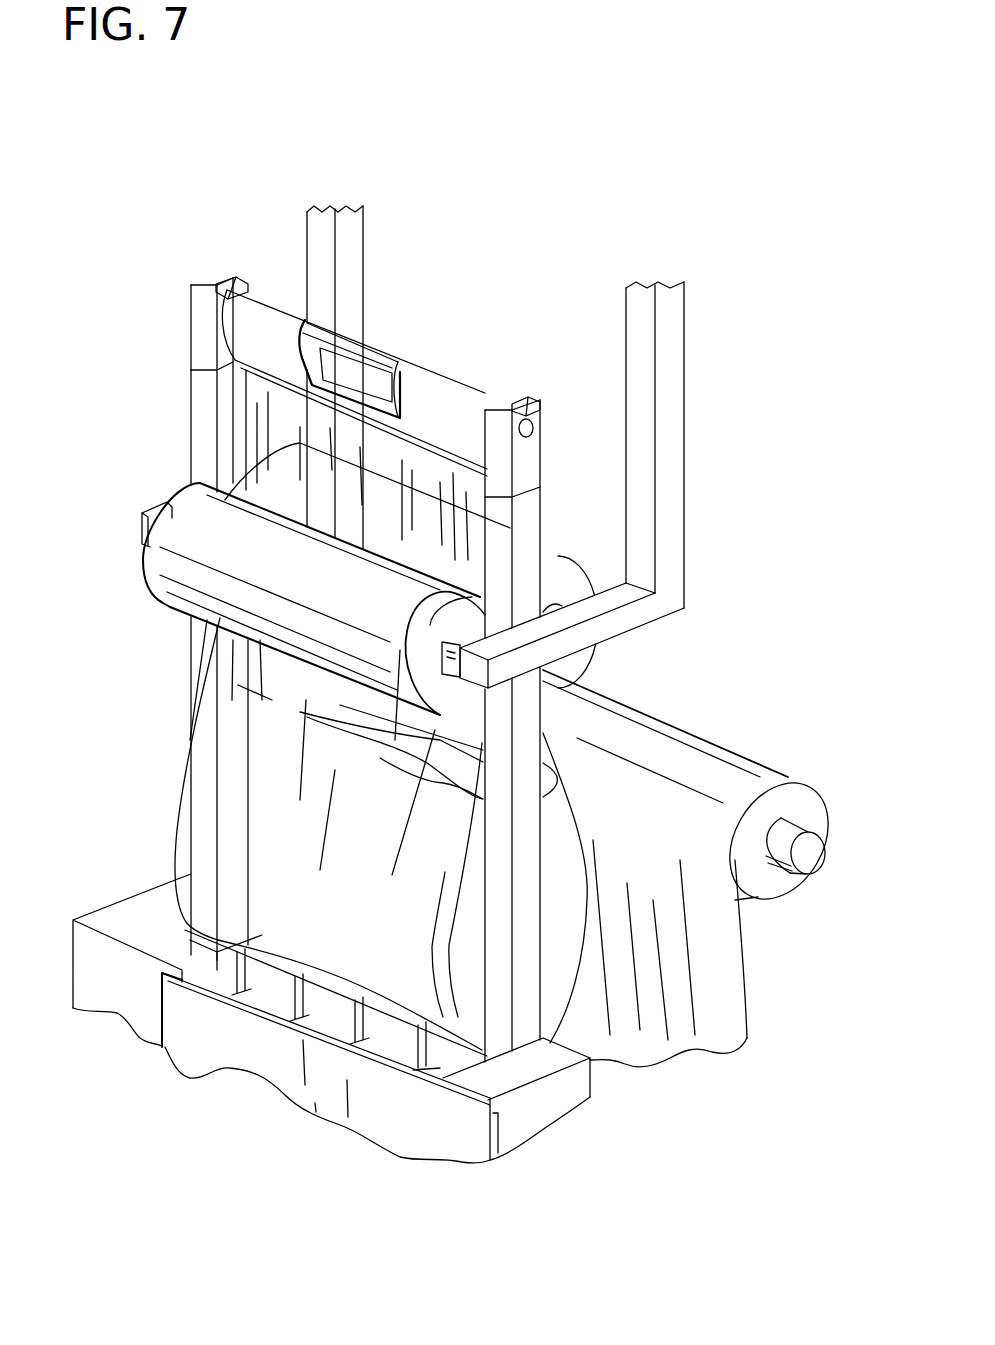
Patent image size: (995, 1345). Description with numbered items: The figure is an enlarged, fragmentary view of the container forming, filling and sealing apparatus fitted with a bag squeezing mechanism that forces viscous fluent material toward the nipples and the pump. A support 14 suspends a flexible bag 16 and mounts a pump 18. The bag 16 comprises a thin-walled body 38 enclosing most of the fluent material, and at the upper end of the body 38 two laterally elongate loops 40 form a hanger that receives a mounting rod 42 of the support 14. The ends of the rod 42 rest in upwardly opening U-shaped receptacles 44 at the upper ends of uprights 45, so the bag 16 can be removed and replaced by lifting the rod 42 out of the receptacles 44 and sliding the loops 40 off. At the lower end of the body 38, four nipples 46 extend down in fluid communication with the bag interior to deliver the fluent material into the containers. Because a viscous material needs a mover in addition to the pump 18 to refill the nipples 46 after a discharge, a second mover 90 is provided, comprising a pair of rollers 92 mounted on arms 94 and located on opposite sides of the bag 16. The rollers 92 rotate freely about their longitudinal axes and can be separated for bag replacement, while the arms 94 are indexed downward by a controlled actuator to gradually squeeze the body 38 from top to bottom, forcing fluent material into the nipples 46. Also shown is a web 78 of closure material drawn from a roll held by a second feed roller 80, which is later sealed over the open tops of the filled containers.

The support 14 is at (190, 425).
The flexible bag 16 is at (160, 857).
The pump 18 is at (447, 1163).
The body 38 is at (275, 806).
The loops 40 is at (276, 318).
The mounting rod 42 is at (533, 431).
The U-shaped receptacles 44 is at (221, 274).
The uprights 45 is at (210, 446).
The nipples 46 is at (413, 1072).
The closure material web 78 is at (730, 1006).
The second feed roller 80 is at (815, 847).
The second mover 90 is at (706, 432).
The rollers 92 is at (158, 557).
The arms 94 is at (352, 250).